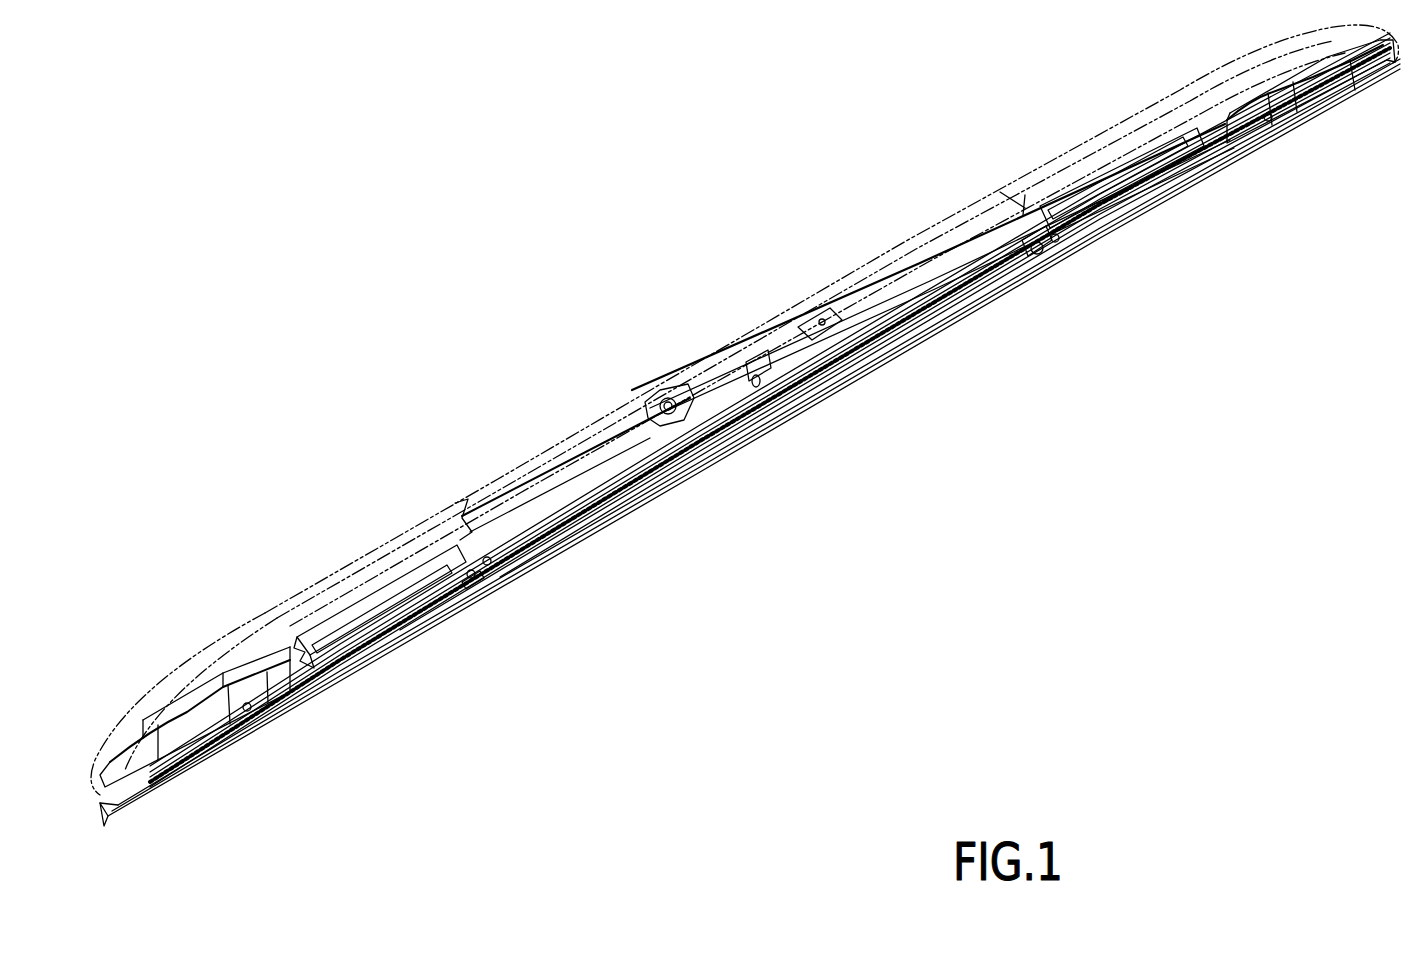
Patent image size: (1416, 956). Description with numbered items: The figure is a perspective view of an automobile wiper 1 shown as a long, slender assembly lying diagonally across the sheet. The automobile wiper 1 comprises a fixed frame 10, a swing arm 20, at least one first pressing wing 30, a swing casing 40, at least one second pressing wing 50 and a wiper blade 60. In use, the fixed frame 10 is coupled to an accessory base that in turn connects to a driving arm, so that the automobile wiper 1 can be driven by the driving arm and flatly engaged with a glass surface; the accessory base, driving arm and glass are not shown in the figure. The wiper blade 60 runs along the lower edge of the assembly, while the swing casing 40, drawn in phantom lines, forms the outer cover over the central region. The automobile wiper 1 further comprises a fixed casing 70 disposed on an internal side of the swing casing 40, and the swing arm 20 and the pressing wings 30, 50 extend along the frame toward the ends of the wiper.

The automobile wiper 1 is at (752, 20).
The fixed frame 10 is at (710, 353).
The swing arm 20 is at (358, 603).
The first pressing wing 30 is at (657, 497).
The swing casing 40 is at (268, 620).
The second pressing wing 50 is at (210, 705).
The wiper blade 60 is at (757, 438).
The fixed casing 70 is at (617, 428).